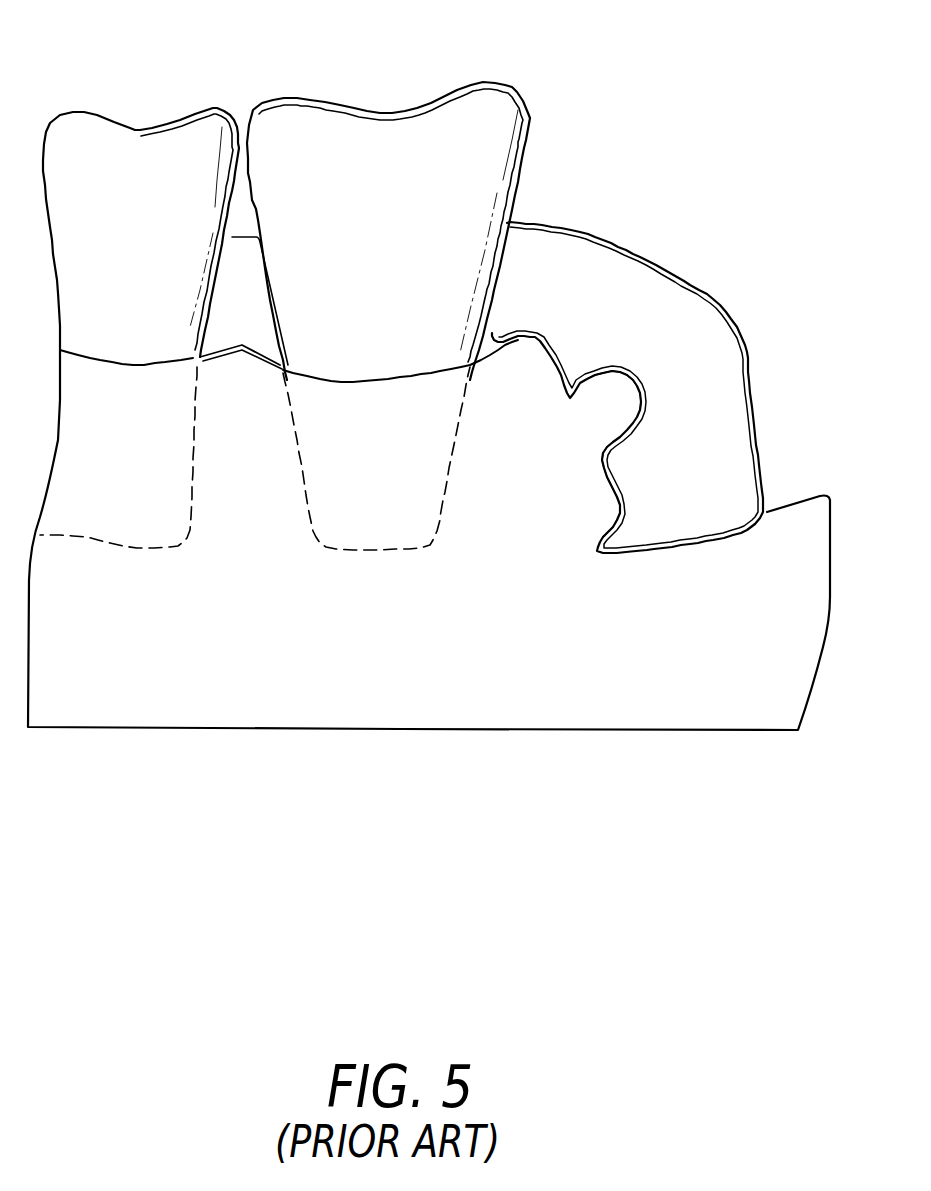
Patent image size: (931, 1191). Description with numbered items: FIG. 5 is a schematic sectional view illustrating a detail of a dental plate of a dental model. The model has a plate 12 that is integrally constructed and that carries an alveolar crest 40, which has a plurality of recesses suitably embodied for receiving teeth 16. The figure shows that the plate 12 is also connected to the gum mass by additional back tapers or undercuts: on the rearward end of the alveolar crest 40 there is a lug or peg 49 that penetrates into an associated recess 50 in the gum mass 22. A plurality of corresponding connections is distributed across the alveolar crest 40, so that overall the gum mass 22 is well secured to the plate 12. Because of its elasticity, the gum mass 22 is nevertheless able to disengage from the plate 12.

The plate 12 is at (393, 687).
The teeth 16 is at (468, 108).
The gum mass 22 is at (687, 343).
The alveolar crest 40 is at (263, 513).
The lug or peg 49 is at (610, 390).
The recess 50 is at (606, 414).